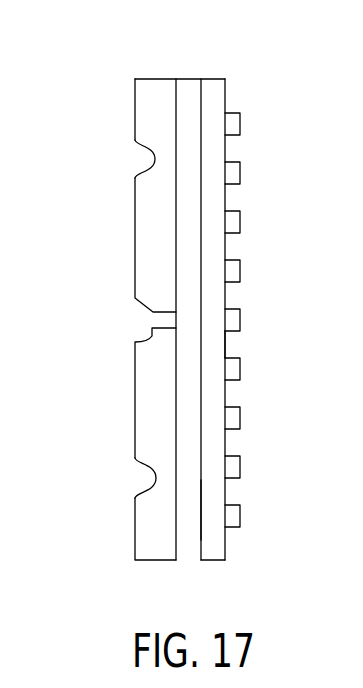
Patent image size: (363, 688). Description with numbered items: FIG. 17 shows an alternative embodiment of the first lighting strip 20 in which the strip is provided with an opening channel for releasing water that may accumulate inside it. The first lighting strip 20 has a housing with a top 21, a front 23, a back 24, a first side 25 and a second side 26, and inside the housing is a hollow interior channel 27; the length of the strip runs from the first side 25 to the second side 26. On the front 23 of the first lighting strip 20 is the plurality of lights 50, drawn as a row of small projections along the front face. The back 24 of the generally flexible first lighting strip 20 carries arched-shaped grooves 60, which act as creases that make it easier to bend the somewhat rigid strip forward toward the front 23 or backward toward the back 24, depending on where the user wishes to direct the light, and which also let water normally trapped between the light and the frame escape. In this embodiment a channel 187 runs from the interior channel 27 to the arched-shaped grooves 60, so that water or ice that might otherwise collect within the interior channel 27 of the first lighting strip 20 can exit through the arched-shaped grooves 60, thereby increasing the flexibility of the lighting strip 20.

The first lighting strip 20 is at (212, 103).
The top 21 is at (210, 507).
The front 23 is at (230, 345).
The back 24 is at (133, 403).
The first side 25 is at (212, 562).
The second side 26 is at (152, 78).
The hollow interior channel 27 is at (188, 457).
The plurality of lights 50 is at (240, 270).
The arched-shaped grooves 60 is at (142, 160).
The channel 187 is at (163, 310).